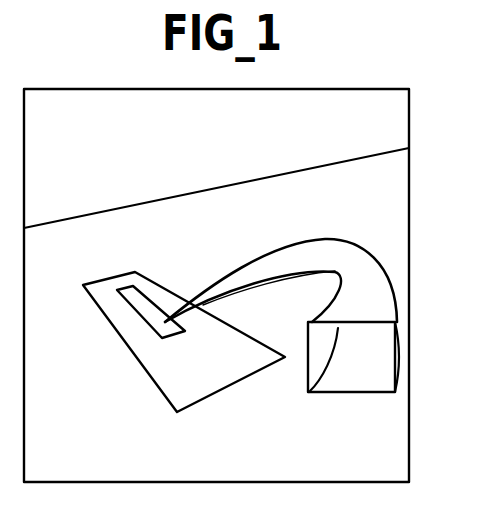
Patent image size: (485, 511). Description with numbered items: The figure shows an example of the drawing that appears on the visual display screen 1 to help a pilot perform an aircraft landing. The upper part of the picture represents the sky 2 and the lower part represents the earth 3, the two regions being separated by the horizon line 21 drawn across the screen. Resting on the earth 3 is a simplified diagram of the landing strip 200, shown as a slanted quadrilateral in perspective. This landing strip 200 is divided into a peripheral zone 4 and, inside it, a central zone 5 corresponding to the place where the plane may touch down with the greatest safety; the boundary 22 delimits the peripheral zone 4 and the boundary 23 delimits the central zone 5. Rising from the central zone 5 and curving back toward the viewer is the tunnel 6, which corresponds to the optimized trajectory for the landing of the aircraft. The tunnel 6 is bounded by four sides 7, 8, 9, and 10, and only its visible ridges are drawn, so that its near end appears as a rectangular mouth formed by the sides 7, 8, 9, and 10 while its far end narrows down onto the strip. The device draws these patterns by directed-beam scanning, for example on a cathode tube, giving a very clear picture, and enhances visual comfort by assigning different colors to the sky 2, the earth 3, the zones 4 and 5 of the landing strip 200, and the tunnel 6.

The screen 1 is at (311, 88).
The sky 2 is at (333, 119).
The earth 3 is at (267, 220).
The peripheral zone 4 is at (152, 288).
The central zone 5 is at (152, 317).
The tunnel 6 is at (366, 250).
The side of tunnel 7 is at (315, 368).
The side of tunnel 8 is at (398, 365).
The side of tunnel 9 is at (387, 308).
The side of tunnel 10 is at (357, 385).
The partition wall 21 is at (163, 199).
The boundary of peripheral zone 22 is at (100, 317).
The boundary of central zone 23 is at (170, 333).
The landing strip 200 is at (107, 278).